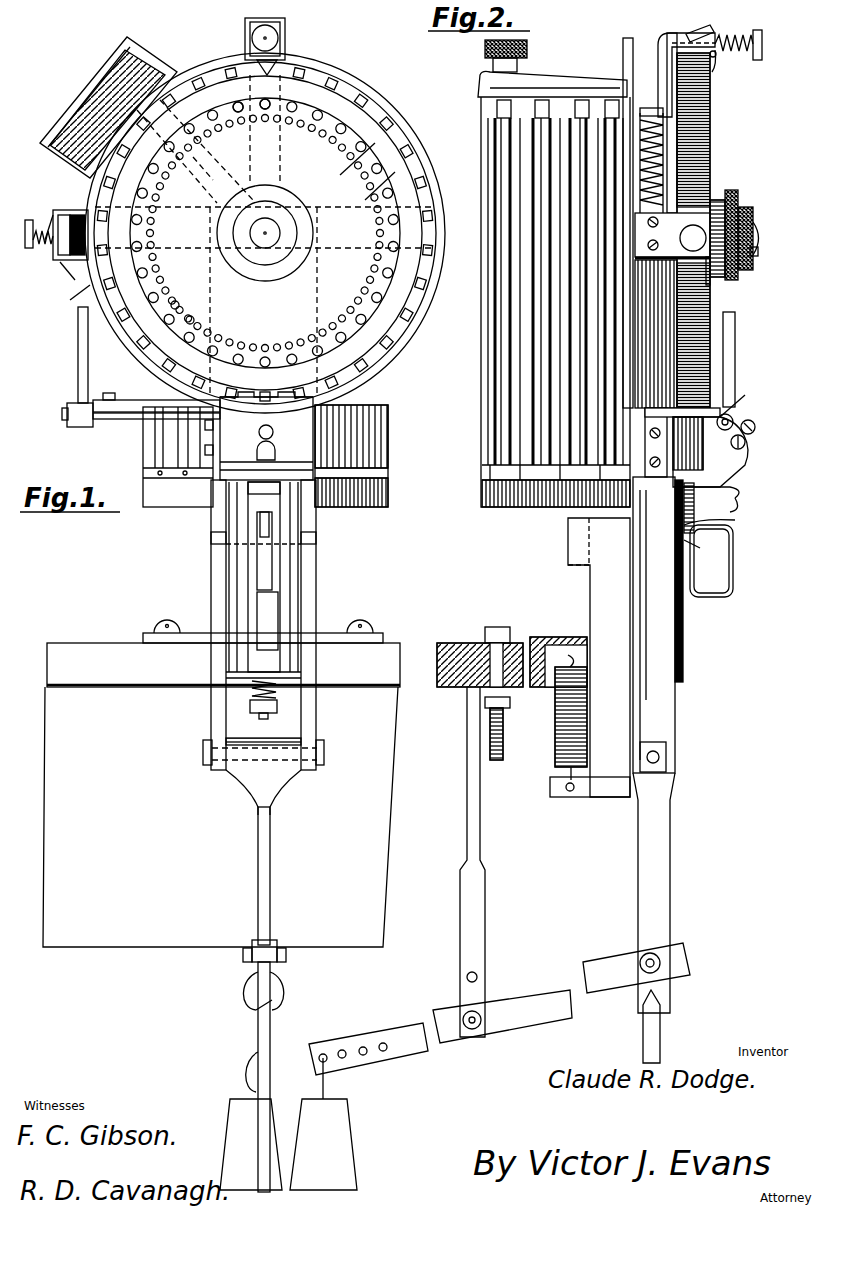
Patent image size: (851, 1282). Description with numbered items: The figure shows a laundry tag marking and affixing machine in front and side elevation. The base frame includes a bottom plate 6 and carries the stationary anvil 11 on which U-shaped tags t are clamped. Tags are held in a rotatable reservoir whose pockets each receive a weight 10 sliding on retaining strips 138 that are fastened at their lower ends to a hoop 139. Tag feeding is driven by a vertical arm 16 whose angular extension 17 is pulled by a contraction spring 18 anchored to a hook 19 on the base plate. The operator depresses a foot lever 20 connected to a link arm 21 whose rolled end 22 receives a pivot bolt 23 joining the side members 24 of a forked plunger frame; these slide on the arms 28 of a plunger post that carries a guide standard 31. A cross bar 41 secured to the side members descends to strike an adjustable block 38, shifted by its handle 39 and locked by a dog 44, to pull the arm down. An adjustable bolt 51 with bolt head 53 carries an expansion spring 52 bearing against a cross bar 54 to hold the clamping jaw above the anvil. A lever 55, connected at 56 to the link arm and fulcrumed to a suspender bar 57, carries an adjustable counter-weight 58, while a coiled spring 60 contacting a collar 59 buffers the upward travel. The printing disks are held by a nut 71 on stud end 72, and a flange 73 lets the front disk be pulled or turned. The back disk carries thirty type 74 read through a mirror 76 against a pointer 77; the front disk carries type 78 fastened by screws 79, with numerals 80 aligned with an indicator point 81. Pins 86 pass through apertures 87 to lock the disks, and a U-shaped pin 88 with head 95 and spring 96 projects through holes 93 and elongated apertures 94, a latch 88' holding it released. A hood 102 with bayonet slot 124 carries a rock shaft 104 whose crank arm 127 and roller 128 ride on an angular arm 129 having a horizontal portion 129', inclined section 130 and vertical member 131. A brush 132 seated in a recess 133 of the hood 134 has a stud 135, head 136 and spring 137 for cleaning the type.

In FIG. 1, the bottom plate 6 is at (185, 632).
In FIG. 2, the bottom plate 6 is at (474, 640).
In FIG. 2, the weight 10 is at (575, 110).
In FIG. 1, the stationary jaw or anvil 11 is at (283, 560).
In FIG. 2, the stationary jaw or anvil 11 is at (701, 508).
In FIG. 2, the vertical arm 16 is at (599, 657).
In FIG. 2, the angular extension 17 is at (570, 800).
In FIG. 2, the contraction spring 18 is at (555, 740).
In FIG. 2, the hook 19 is at (568, 655).
In FIG. 1, the foot lever 20 is at (274, 1030).
In FIG. 2, the foot lever 20 is at (662, 1038).
In FIG. 1, the link arm 21 is at (271, 862).
In FIG. 2, the link arm 21 is at (672, 872).
In FIG. 1, the widened rolled end 22 is at (280, 773).
In FIG. 1, the pivot bolt 23 is at (324, 750).
In FIG. 1, the side members 24 is at (212, 582).
In FIG. 2, the side members 24 is at (660, 707).
In FIG. 1, the arms 28 is at (232, 514).
In FIG. 2, the arms 28 is at (684, 624).
In FIG. 2, the vertical guide standard or rod 31 is at (672, 218).
In FIG. 1, the member for placing tag-feeding mechanism in and out of operation 38 is at (268, 600).
In FIG. 1, the handle portion 39 is at (266, 556).
In FIG. 2, the handle portion 39 is at (735, 560).
In FIG. 1, the cross bar 41 is at (212, 540).
In FIG. 2, the cross bar 41 is at (702, 553).
In FIG. 1, the locking dog 44 is at (300, 508).
In FIG. 2, the locking dog 44 is at (735, 524).
In FIG. 1, the adjustable bolt or stud 51 is at (258, 686).
In FIG. 1, the expansion spring 52 is at (279, 705).
In FIG. 1, the bolt head 53 is at (260, 724).
In FIG. 1, the cross bar 54 is at (256, 672).
In FIG. 2, the lever 55 is at (508, 1000).
In FIG. 2, the connection 56 is at (643, 955).
In FIG. 2, the suspender bar 57 is at (465, 910).
In FIG. 1, the counter-weight 58 is at (288, 1124).
In FIG. 2, the adjustable collar 59 is at (680, 108).
In FIG. 2, the coiled spring 60 is at (665, 133).
In FIG. 1, the nut 71 is at (293, 218).
In FIG. 2, the nut 71 is at (742, 210).
In FIG. 1, the end of stud 72 is at (275, 235).
In FIG. 2, the end of stud 72 is at (760, 232).
In FIG. 1, the flange 73 is at (268, 205).
In FIG. 2, the flange 73 is at (718, 200).
In FIG. 1, the type 74 is at (408, 160).
In FIG. 1, the mirror 76 is at (130, 57).
In FIG. 2, the mirror 76 is at (628, 50).
In FIG. 1, the indicating pointer 77 is at (110, 90).
In FIG. 2, the indicating pointer 77 is at (692, 168).
In FIG. 1, the type 78 is at (355, 95).
In FIG. 1, the screws or fastening means 79 is at (380, 125).
In FIG. 1, the numerals 80 is at (310, 78).
In FIG. 1, the indicator point 81 is at (279, 62).
In FIG. 2, the indicator point 81 is at (718, 58).
In FIG. 1, the pins 86 is at (262, 118).
In FIG. 1, the transverse apertures 87 is at (190, 320).
In FIG. 2, the angular U-shaped pin 88 is at (672, 63).
In FIG. 1, the pivoted U-shaped latch 88' is at (281, 32).
In FIG. 2, the pivoted U-shaped latch 88' is at (717, 24).
In FIG. 1, the circular holes 93 is at (395, 172).
In FIG. 1, the elongated aperture 94 is at (375, 143).
In FIG. 1, the head 95 is at (252, 38).
In FIG. 2, the head 95 is at (764, 44).
In FIG. 2, the spring 96 is at (720, 60).
In FIG. 2, the cup-shaped member 102 is at (740, 452).
In FIG. 1, the rock shaft 104 is at (130, 400).
In FIG. 2, the rock shaft 104 is at (733, 418).
In FIG. 1, the bayonet slot 124 is at (315, 413).
In FIG. 1, the crank-shaped arm 127 is at (97, 420).
In FIG. 2, the crank-shaped arm 127 is at (755, 424).
In FIG. 1, the bearing roller 128 is at (73, 427).
In FIG. 2, the bearing roller 128 is at (745, 440).
In FIG. 2, the angular arm 129 is at (745, 487).
In FIG. 2, the forwardly and horizontally projecting portion 129' is at (680, 431).
In FIG. 2, the short inclined section 130 is at (745, 398).
In FIG. 1, the vertically extending member 131 is at (78, 360).
In FIG. 2, the vertically extending member 131 is at (735, 332).
In FIG. 1, the brush 132 is at (62, 212).
In FIG. 1, the recess 133 is at (82, 274).
In FIG. 2, the recess 133 is at (712, 273).
In FIG. 1, the hood 134 is at (88, 290).
In FIG. 2, the hood 134 is at (705, 146).
In FIG. 1, the stud 135 is at (42, 230).
In FIG. 1, the head 136 is at (28, 220).
In FIG. 2, the head 136 is at (758, 255).
In FIG. 1, the spring 137 is at (53, 252).
In FIG. 2, the retaining strips 138 is at (540, 372).
In FIG. 2, the hoop or band 139 is at (555, 472).
In FIG. 2, the tags t is at (740, 502).